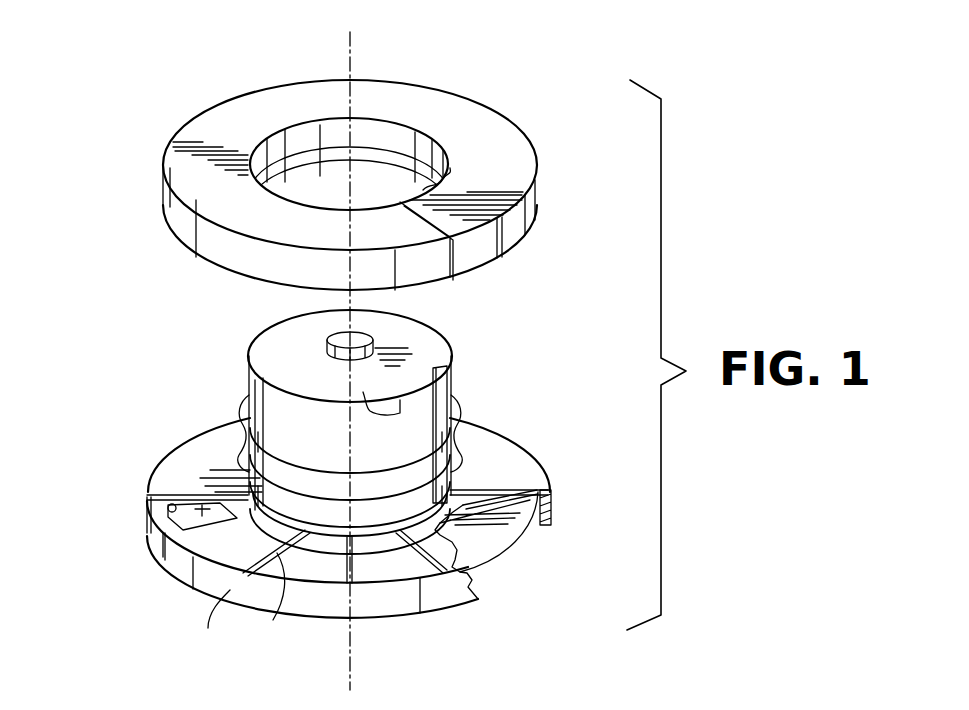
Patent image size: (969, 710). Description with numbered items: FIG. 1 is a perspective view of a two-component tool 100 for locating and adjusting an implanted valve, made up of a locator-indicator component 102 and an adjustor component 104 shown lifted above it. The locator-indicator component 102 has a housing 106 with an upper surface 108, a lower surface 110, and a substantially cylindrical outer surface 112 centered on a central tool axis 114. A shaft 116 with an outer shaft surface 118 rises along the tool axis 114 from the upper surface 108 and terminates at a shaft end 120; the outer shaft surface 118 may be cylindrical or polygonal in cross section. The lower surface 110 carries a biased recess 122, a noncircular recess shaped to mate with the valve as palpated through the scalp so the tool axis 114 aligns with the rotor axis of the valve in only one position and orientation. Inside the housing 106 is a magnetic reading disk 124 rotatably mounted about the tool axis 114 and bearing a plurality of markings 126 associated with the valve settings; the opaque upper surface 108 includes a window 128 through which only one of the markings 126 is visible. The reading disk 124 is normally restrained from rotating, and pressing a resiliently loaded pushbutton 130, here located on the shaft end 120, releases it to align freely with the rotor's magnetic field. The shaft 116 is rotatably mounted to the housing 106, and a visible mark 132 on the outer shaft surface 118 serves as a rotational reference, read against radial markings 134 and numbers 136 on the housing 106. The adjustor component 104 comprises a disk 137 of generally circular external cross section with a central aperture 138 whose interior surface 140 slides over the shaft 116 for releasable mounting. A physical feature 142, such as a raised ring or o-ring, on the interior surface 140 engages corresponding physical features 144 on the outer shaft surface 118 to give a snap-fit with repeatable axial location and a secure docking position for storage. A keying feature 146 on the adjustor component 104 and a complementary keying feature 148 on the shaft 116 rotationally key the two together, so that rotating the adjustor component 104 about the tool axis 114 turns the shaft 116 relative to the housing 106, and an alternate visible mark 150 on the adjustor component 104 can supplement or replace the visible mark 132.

The two-component tool 100 is at (155, 331).
The locator-indicator component 102 is at (557, 492).
The adjustor component 104 is at (331, 166).
The housing 106 is at (353, 544).
The upper surface 108 is at (515, 475).
The lower surface 110 is at (392, 617).
The cylindrical outer surface 112 is at (432, 593).
The tool axis 114 is at (350, 42).
The shaft 116 is at (267, 357).
The outer shaft surface 118 is at (252, 382).
The shaft end 120 is at (356, 426).
The biased recess 122 is at (150, 538).
The magnetic reading disk 124 is at (500, 527).
The markings 126 is at (197, 500).
The window 128 is at (168, 507).
The pushbutton 130 is at (362, 337).
The visible mark 132 is at (363, 392).
The radial markings 134 is at (343, 560).
The numbers 136 is at (230, 590).
The disk 137 is at (162, 187).
The central aperture 138 is at (257, 143).
The interior surface 140 is at (283, 143).
The physical feature 142 is at (437, 160).
The corresponding physical features 144 is at (457, 405).
The keying feature 146 is at (437, 186).
The complementary keying feature 148 is at (455, 385).
The alternate visible mark 150 is at (453, 257).